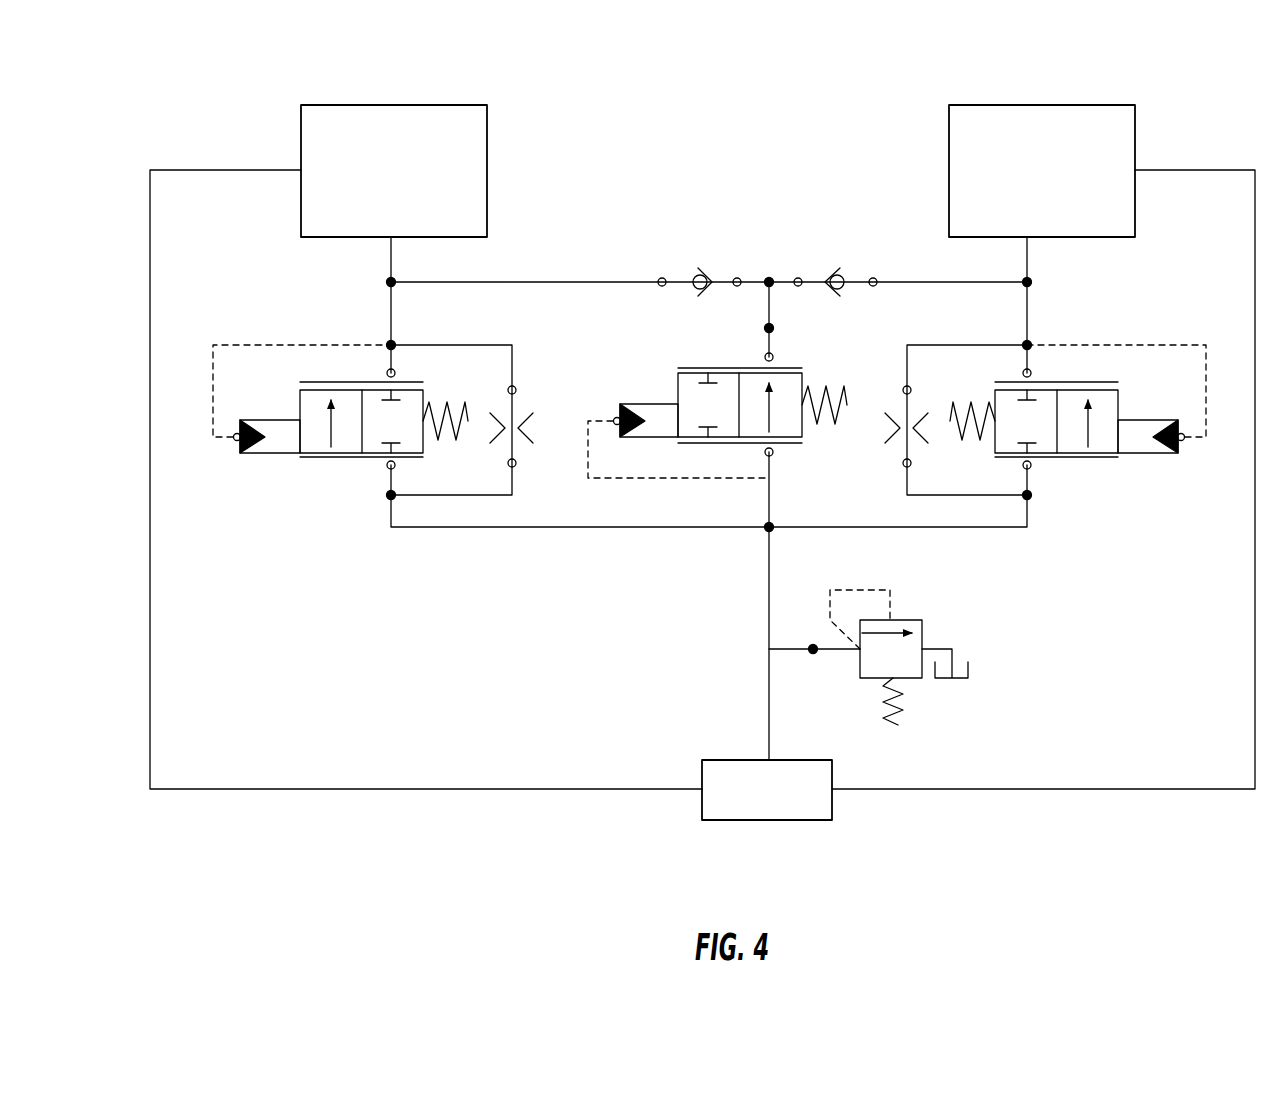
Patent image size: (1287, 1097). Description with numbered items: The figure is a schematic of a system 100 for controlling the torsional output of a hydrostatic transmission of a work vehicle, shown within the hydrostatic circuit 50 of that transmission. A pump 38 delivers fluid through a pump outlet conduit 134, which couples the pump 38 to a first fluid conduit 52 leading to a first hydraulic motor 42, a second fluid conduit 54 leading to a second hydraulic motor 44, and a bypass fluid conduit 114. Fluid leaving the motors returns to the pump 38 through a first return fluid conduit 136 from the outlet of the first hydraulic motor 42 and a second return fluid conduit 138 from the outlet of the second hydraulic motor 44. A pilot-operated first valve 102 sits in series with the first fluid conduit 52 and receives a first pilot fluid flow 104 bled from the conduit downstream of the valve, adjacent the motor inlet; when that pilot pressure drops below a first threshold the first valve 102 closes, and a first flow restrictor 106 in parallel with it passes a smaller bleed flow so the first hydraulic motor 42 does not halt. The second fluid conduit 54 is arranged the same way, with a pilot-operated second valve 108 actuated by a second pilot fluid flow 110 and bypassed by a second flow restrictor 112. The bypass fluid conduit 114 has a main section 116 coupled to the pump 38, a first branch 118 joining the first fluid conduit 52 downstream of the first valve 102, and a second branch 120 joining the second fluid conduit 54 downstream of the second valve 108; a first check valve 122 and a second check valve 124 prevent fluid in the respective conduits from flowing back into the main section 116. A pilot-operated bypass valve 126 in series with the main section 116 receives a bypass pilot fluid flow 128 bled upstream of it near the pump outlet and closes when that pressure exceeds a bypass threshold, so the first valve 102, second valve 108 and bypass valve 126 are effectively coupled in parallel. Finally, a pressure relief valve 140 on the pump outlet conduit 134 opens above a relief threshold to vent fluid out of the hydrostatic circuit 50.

The system 100 is at (178, 122).
The hydrostatic circuit 50 is at (257, 826).
The first hydraulic motor 42 is at (487, 172).
The second hydraulic motor 44 is at (949, 172).
The pump 38 is at (742, 760).
The first fluid conduit 52 is at (391, 315).
The second fluid conduit 54 is at (1027, 315).
The first valve 102 is at (315, 486).
The first pilot fluid flow 104 is at (266, 345).
The first flow restrictor 106 is at (527, 397).
The second valve 108 is at (1091, 486).
The second pilot fluid flow 110 is at (1140, 345).
The second flow restrictor 112 is at (880, 387).
The bypass fluid conduit 114 is at (733, 306).
The main section 116 is at (769, 510).
The first branch 118 is at (555, 282).
The second branch 120 is at (918, 282).
The first check valve 122 is at (684, 266).
The second check valve 124 is at (832, 266).
The bypass valve 126 is at (659, 383).
The bypass pilot fluid flow 128 is at (690, 490).
The pump outlet conduit 134 is at (769, 585).
The first return fluid conduit 136 is at (150, 552).
The second return fluid conduit 138 is at (1255, 613).
The pressure relief valve 140 is at (962, 651).